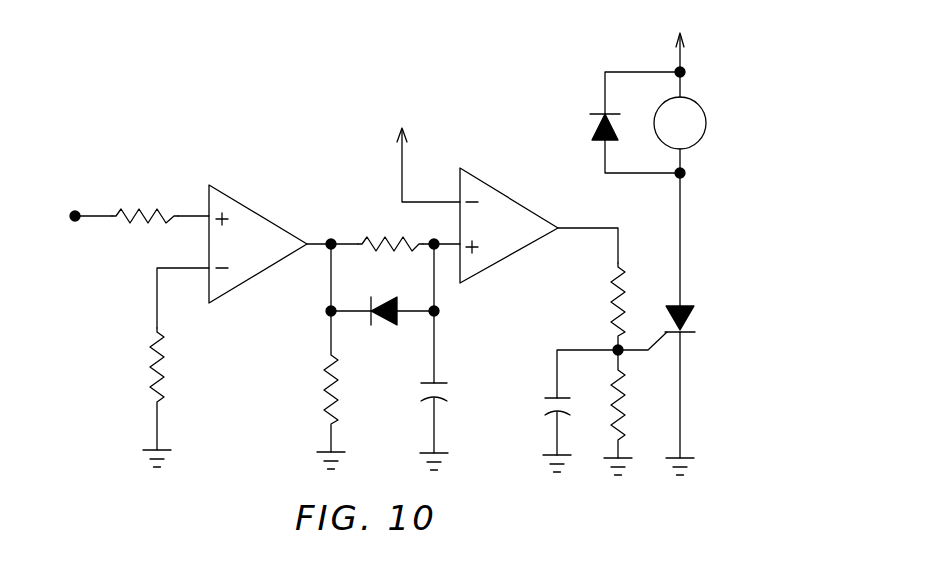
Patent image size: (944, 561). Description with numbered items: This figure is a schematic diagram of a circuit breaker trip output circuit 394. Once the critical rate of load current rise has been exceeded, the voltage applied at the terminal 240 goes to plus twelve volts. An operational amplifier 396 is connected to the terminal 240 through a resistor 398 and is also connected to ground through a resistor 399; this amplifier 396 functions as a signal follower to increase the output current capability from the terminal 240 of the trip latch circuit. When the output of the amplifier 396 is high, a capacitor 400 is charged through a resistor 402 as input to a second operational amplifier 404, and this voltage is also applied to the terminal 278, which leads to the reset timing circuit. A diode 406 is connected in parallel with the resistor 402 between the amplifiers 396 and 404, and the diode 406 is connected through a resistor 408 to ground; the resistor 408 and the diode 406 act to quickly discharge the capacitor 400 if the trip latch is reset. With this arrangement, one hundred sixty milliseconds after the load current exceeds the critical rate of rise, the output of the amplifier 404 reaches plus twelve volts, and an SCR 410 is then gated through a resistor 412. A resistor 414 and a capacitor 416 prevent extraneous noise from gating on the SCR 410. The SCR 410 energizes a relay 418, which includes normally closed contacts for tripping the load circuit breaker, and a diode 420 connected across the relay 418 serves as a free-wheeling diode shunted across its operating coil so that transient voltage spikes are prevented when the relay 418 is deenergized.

The terminal 240 is at (75, 210).
The resistor 398 is at (145, 207).
The operational amplifier 396 is at (255, 210).
The resistor 399 is at (150, 357).
The trip output circuit 394 is at (327, 135).
The terminal 278 is at (405, 136).
The resistor 402 is at (373, 240).
The second operational amplifier 404 is at (527, 207).
The diode 406 is at (383, 322).
The resistor 408 is at (327, 388).
The capacitor 400 is at (437, 380).
The resistor 412 is at (612, 298).
The capacitor 416 is at (550, 395).
The resistor 414 is at (620, 412).
The SCR 410 is at (695, 308).
The relay 418 is at (707, 122).
The diode 420 is at (595, 128).